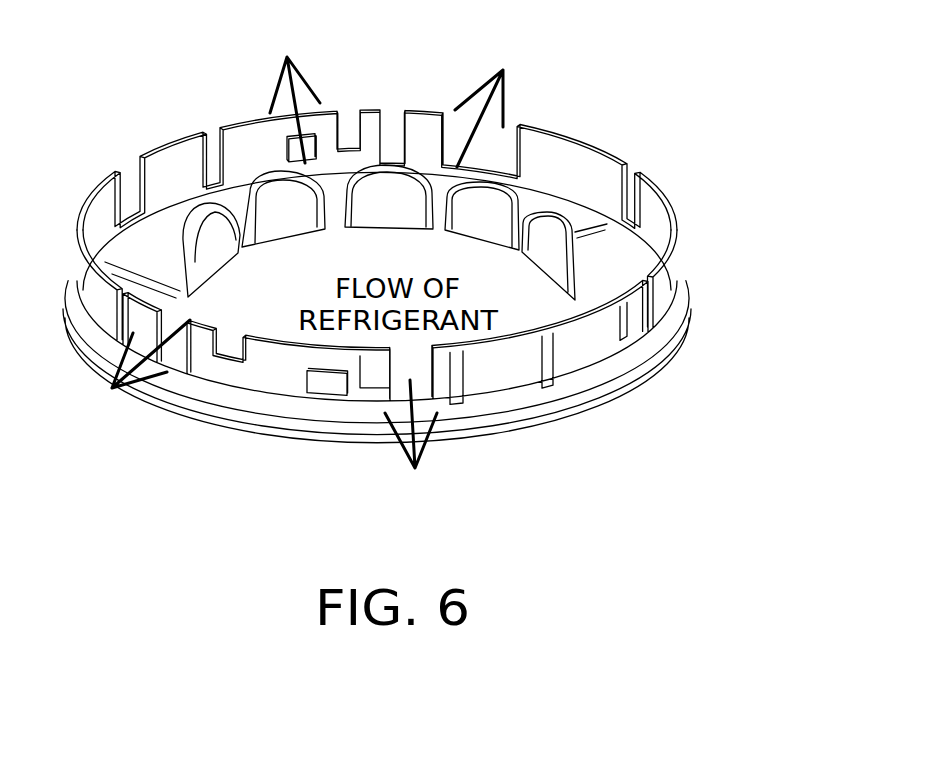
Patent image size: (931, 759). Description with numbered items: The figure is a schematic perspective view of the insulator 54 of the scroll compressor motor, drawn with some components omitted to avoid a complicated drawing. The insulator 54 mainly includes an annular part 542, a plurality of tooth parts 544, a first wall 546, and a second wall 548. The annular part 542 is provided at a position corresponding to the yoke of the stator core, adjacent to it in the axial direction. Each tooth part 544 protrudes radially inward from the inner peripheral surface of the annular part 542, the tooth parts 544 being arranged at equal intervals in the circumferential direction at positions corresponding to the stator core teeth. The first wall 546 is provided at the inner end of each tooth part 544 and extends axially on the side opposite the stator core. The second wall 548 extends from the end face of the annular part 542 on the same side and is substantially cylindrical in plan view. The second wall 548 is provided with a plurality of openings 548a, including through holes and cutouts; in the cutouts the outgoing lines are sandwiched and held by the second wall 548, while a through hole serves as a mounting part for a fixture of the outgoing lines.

The insulator 54 is at (660, 85).
The annular part 542 is at (676, 318).
The tooth parts 544 is at (153, 257).
The first wall 546 is at (207, 240).
The second wall 548 is at (238, 122).
The openings 548a is at (455, 135).